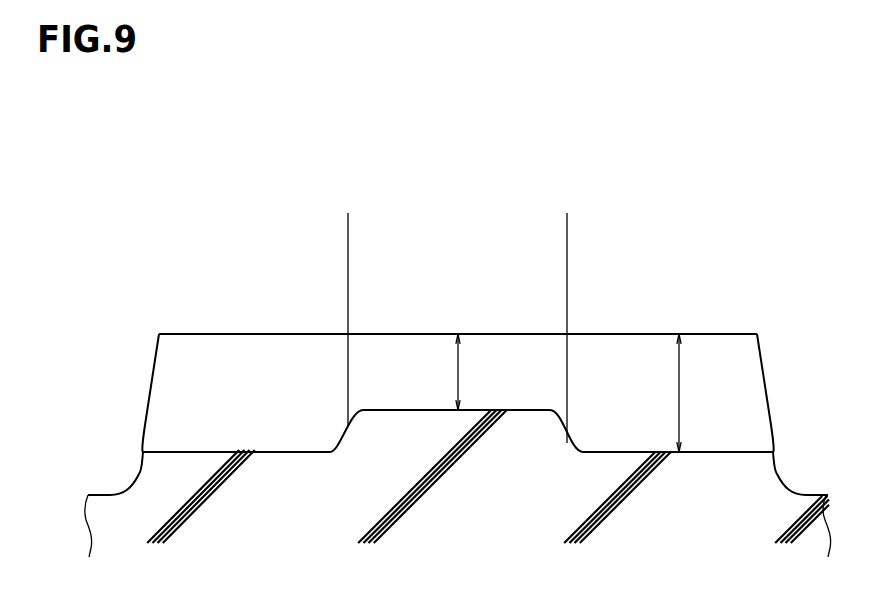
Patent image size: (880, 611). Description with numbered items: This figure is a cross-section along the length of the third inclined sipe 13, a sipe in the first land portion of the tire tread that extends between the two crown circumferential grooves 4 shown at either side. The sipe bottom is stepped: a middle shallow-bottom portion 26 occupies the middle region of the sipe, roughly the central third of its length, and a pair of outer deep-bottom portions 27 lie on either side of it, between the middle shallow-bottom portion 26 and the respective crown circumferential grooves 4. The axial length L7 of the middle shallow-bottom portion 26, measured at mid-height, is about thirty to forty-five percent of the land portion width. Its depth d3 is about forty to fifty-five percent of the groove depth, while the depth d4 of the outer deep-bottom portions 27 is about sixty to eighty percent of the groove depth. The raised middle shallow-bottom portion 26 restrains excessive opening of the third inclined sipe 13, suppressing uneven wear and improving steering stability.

The third inclined sipe 13 is at (243, 330).
The outer deep-bottom portions 27 is at (277, 438).
The middle shallow-bottom portion 26 is at (402, 410).
The crown circumferential grooves 4 is at (115, 478).
The length of the middle shallow-bottom portion L7 is at (567, 223).
The depth of the middle shallow-bottom portion d3 is at (458, 372).
The depth of the outer deep-bottom portions d4 is at (679, 392).